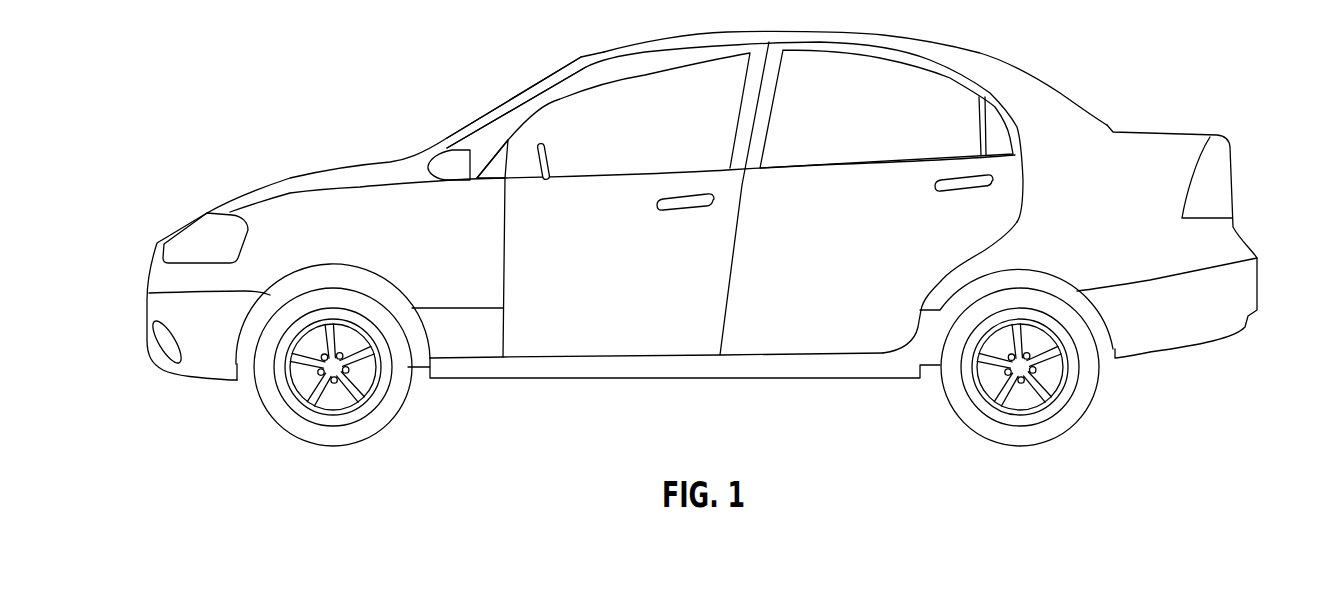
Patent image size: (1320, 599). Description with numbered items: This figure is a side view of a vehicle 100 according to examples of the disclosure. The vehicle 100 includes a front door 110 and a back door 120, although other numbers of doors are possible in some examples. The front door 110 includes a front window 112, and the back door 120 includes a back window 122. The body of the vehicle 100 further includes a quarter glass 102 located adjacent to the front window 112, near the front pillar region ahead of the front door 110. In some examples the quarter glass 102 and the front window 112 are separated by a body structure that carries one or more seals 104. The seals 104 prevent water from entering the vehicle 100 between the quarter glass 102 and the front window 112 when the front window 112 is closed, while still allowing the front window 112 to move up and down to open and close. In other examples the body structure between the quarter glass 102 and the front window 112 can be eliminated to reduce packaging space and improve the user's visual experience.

The vehicle 100 is at (234, 97).
The quarter glass 102 is at (490, 141).
The seals 104 is at (513, 142).
The front door 110 is at (643, 286).
The front window 112 is at (683, 141).
The back door 120 is at (865, 270).
The back window 122 is at (882, 132).